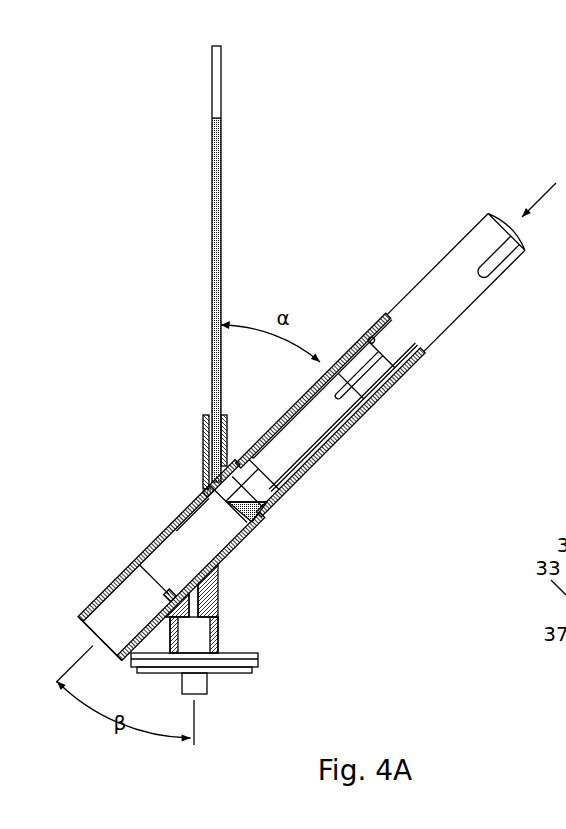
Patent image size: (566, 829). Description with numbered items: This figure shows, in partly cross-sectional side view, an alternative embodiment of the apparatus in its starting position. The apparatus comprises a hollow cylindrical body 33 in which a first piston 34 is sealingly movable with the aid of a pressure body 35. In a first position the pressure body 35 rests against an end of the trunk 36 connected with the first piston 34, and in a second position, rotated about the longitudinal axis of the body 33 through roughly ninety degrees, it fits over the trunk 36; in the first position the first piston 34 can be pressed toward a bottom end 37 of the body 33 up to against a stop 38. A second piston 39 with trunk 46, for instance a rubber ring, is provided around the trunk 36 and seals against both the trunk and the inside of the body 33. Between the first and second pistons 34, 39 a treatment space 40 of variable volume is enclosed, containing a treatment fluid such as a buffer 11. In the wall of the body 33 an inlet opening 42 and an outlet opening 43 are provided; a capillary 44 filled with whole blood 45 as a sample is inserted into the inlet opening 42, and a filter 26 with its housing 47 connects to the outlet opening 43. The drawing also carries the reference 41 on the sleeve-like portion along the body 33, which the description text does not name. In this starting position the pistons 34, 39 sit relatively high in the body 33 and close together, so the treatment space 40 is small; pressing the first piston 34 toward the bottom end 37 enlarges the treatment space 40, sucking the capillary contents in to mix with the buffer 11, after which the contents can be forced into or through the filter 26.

The buffer 11 is at (252, 512).
The filter 26 is at (217, 680).
The hollow cylindrical body 33 is at (117, 602).
The first piston 34 is at (190, 518).
The pressure body 35 is at (457, 298).
The trunk 36 is at (372, 374).
The bottom end 37 is at (86, 616).
The stop 38 is at (175, 595).
The second piston 39 is at (263, 482).
The treatment space 40 is at (228, 466).
The sleeve 41 is at (352, 423).
The inlet opening 42 is at (205, 488).
The outlet opening 43 is at (185, 588).
The capillary 44 is at (212, 80).
The whole blood 45 is at (216, 165).
The trunk 46 is at (315, 432).
The housing 47 is at (262, 677).